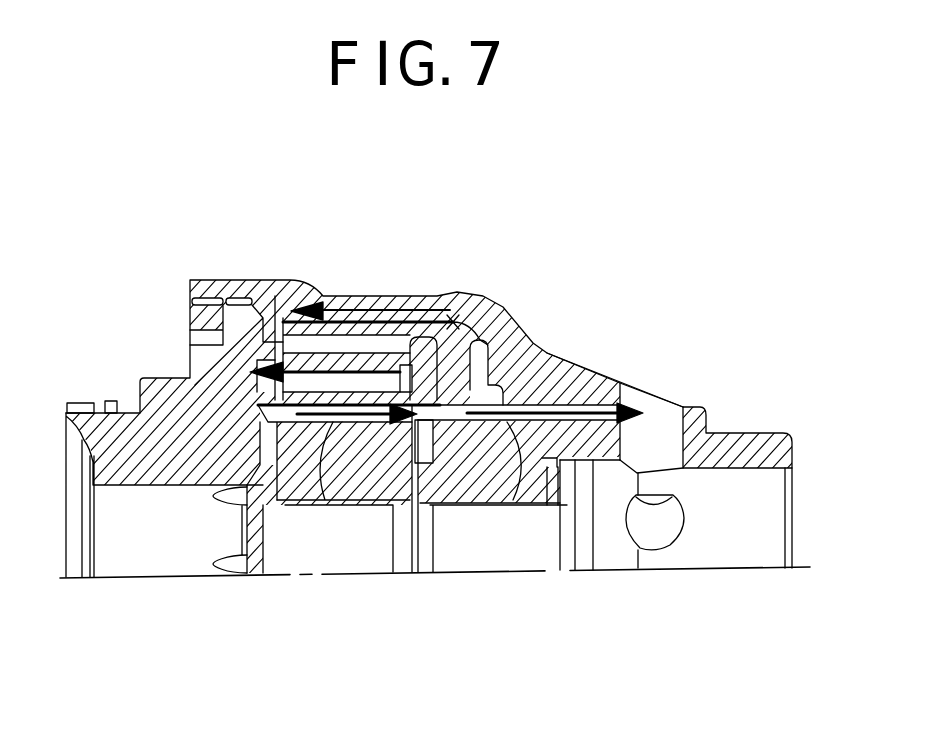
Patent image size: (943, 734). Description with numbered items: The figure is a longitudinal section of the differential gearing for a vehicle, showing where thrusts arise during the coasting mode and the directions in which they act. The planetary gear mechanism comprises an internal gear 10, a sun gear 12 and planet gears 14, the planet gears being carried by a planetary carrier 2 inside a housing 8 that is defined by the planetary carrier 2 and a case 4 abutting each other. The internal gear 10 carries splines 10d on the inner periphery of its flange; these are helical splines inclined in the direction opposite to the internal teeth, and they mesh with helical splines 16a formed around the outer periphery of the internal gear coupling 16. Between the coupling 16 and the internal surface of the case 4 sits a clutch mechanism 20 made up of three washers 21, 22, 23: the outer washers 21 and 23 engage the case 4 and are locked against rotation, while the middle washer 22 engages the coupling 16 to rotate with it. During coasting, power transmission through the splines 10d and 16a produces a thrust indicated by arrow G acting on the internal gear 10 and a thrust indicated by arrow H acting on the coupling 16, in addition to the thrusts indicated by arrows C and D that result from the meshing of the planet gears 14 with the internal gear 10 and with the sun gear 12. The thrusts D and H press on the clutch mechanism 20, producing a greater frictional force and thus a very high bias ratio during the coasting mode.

The planetary carrier 2 is at (231, 318).
The case 4 is at (276, 322).
The housing 8 is at (277, 210).
The internal gear 10 is at (463, 293).
The splines 10d is at (543, 360).
The helical splines 16a is at (676, 357).
The sun gear 12 is at (362, 470).
The planet gears 14 is at (273, 403).
The internal gear coupling 16 is at (467, 472).
The clutch mechanism 20 is at (700, 607).
The washer 21 is at (563, 470).
The washer 22 is at (580, 462).
The washer 23 is at (592, 470).
The arrow C is at (350, 296).
The arrow G is at (452, 321).
The arrow H is at (513, 423).
The arrow D is at (327, 502).